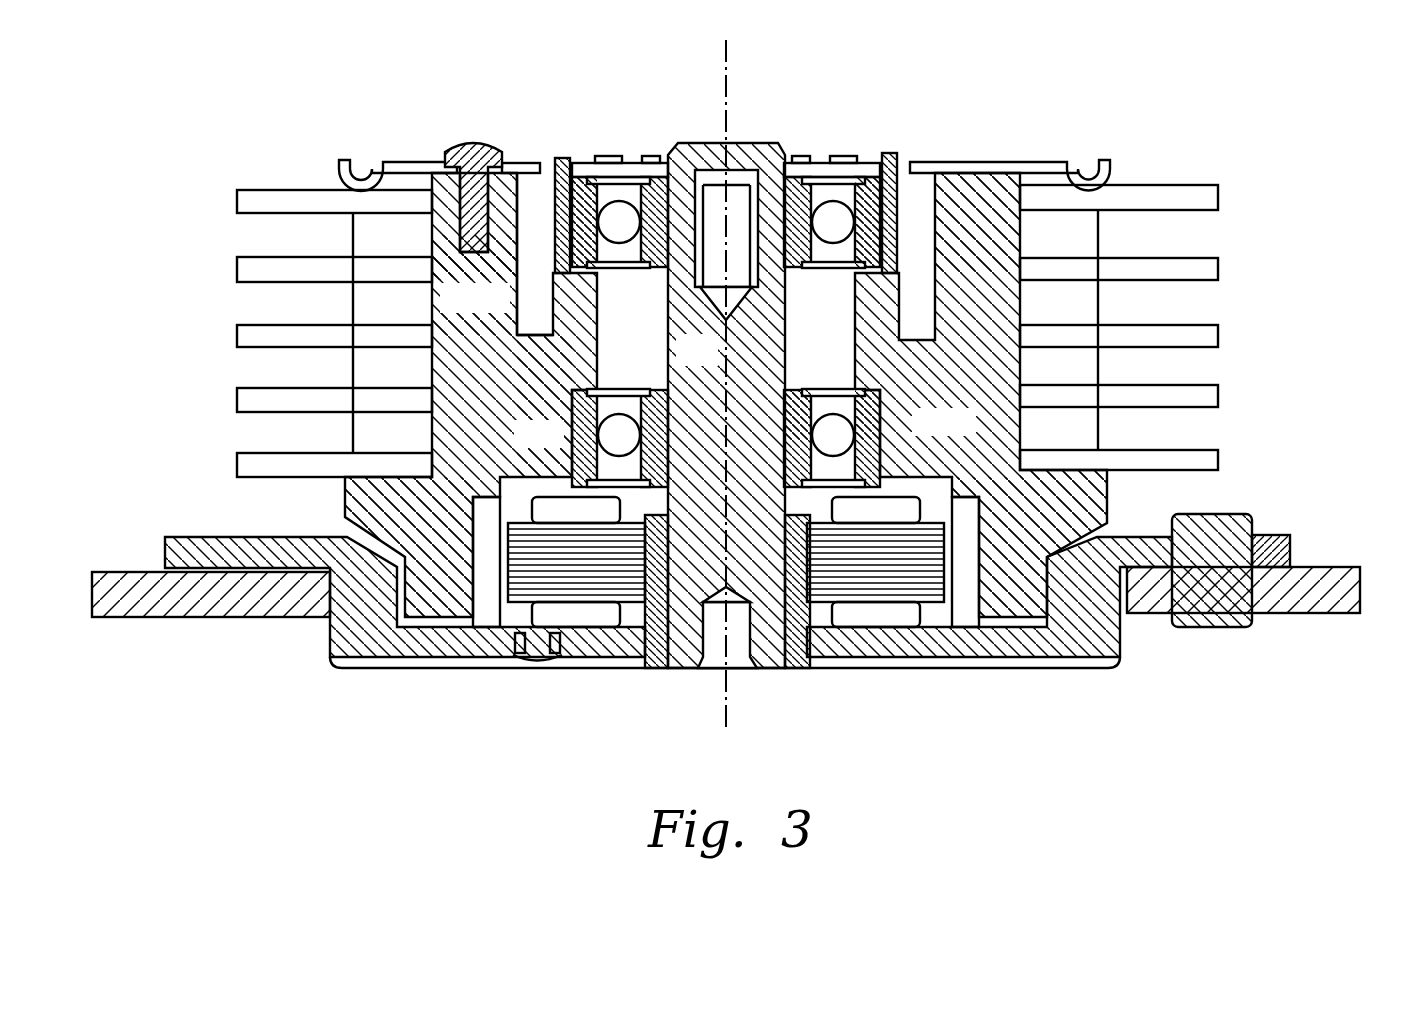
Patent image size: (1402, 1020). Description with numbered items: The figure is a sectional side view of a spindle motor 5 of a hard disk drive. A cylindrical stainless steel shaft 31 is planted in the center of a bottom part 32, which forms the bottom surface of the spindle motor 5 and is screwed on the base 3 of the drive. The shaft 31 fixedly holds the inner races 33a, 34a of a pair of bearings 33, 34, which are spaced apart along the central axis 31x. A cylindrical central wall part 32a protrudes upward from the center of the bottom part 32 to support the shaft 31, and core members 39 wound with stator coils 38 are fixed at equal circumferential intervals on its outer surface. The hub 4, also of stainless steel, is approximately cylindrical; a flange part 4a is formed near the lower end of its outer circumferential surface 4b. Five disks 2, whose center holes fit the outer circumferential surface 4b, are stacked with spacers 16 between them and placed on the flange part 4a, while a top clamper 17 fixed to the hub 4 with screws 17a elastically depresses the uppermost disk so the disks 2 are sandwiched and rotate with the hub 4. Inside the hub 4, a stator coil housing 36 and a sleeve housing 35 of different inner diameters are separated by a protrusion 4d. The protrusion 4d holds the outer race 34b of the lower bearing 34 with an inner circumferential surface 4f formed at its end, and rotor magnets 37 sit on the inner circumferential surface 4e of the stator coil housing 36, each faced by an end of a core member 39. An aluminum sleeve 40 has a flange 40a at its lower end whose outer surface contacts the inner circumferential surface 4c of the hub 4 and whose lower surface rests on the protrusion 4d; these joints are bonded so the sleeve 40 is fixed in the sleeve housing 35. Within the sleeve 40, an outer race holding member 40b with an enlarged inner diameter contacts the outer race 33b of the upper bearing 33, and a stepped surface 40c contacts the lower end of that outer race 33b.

The disk 2 is at (237, 198).
The base 3 is at (1292, 603).
The hub 4 is at (433, 205).
The flange part 4a is at (1083, 498).
The outer circumferential surface 4b is at (433, 262).
The inner circumferential surface 4c is at (522, 203).
The protrusion 4d is at (478, 442).
The inner circumferential surface 4e is at (497, 470).
The inner circumferential surface 4f is at (613, 393).
The spindle motor 5 is at (990, 106).
The spacer 16 is at (1068, 229).
The top clamper 17 is at (397, 158).
The screw 17a is at (443, 147).
The shaft 31 is at (683, 642).
The central axis 31x is at (735, 82).
The bottom part 32 is at (1075, 652).
The central wall part 32a is at (800, 620).
The bearing 33 is at (856, 128).
The inner race 33a is at (646, 183).
The outer race 33b is at (583, 190).
The bearing 34 is at (634, 362).
The inner race 34a is at (795, 400).
The outer race 34b is at (862, 424).
The sleeve housing 35 is at (906, 170).
The stator coil housing 36 is at (943, 612).
The rotor magnet 37 is at (485, 593).
The stator coil 38 is at (863, 613).
The core member 39 is at (907, 607).
The sleeve 40 is at (470, 262).
The flange 40a is at (477, 320).
The outer race holding member 40b is at (553, 187).
The stepped surface 40c is at (580, 277).